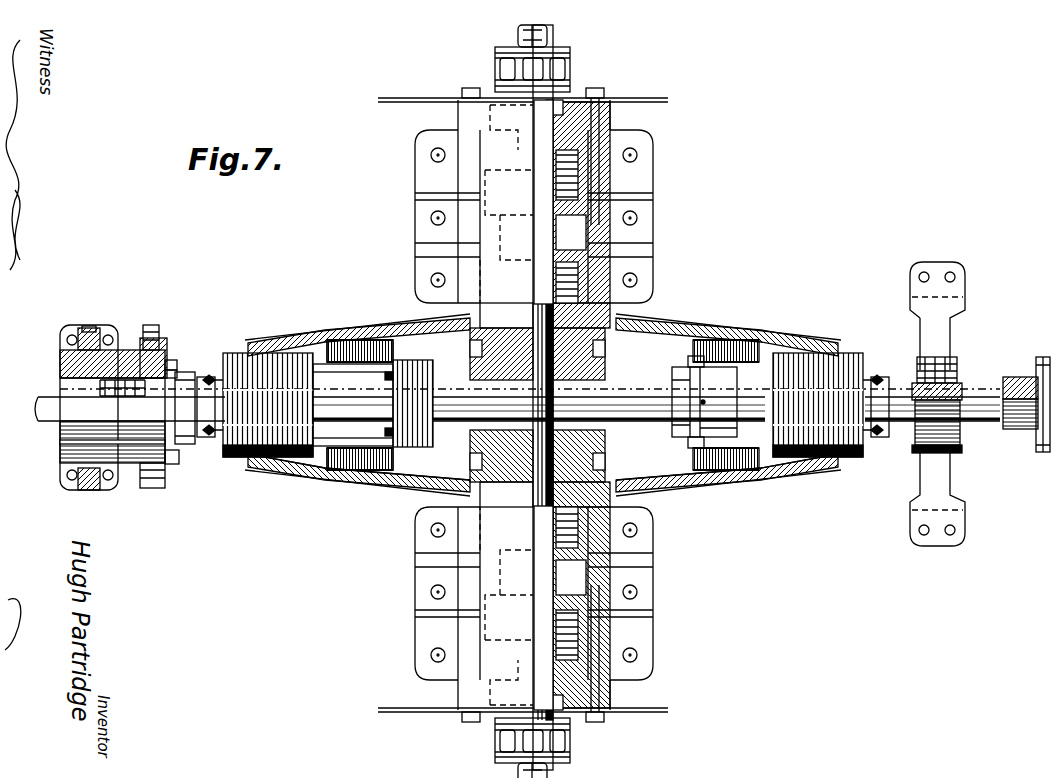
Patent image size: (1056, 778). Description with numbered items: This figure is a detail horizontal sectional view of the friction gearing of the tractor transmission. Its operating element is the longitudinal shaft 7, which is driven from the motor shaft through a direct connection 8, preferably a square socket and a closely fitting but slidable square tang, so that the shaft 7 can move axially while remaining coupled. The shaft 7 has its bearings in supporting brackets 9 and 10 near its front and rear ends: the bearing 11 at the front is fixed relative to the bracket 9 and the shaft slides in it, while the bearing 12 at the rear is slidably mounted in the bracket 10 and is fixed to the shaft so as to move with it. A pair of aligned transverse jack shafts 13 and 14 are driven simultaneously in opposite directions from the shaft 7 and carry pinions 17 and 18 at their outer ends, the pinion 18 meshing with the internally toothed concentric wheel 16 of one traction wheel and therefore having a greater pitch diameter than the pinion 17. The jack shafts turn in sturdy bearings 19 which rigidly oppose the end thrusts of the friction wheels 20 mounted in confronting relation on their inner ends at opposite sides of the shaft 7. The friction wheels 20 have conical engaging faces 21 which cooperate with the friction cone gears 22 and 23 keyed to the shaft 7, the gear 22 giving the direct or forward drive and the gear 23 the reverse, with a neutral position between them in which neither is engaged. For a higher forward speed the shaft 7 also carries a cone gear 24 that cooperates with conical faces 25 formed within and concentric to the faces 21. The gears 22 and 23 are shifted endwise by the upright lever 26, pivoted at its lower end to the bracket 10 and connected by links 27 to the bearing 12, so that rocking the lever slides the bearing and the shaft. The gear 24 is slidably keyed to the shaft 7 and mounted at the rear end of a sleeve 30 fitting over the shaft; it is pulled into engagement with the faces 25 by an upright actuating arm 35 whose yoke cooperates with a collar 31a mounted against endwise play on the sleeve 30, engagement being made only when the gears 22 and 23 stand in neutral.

The shaft 7 is at (343, 398).
The direct connection 8 is at (1022, 430).
The supporting bracket 9 is at (920, 468).
The supporting bracket 10 is at (60, 445).
The bearing 11 is at (950, 376).
The bearing 12 is at (142, 490).
The jack shaft 13 is at (558, 246).
The jack shaft 14 is at (570, 556).
The internally toothed concentric wheel 16 is at (543, 397).
The pinion 17 is at (572, 64).
The pinion 18 is at (493, 738).
The bearing 19 is at (415, 200).
The friction wheel 20 is at (345, 340).
The conical engaging face 21 is at (267, 348).
The friction cone gear 22 is at (240, 460).
The friction cone gear 23 is at (834, 352).
The cone gear 24 is at (395, 462).
The conical face 25 is at (655, 345).
The upright lever 26 is at (92, 328).
The link 27 is at (172, 468).
The sleeve 30 is at (517, 405).
The collar 31a is at (688, 440).
The upright actuating arm 35 is at (703, 360).